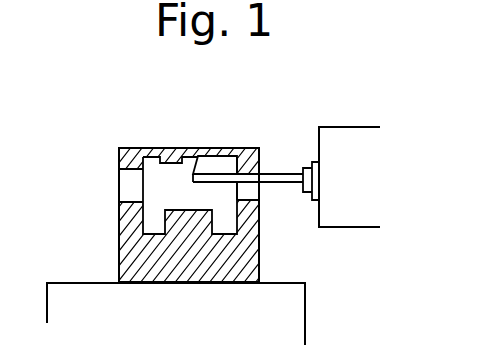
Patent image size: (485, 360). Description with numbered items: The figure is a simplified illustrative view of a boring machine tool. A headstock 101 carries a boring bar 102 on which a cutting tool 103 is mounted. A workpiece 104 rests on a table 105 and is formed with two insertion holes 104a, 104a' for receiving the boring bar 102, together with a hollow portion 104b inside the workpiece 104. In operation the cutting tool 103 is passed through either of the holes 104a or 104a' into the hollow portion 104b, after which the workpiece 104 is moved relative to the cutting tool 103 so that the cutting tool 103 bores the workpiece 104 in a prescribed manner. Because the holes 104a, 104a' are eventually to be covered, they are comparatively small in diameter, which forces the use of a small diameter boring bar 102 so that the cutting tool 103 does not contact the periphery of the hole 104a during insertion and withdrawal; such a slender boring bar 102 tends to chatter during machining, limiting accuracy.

The headstock 101 is at (362, 219).
The boring bar 102 is at (283, 175).
The cutting tool 103 is at (189, 163).
The workpiece 104 is at (247, 152).
The hole 104a is at (273, 206).
The hole 104a' is at (89, 195).
The hollow portion 104b is at (218, 166).
The table 105 is at (287, 323).